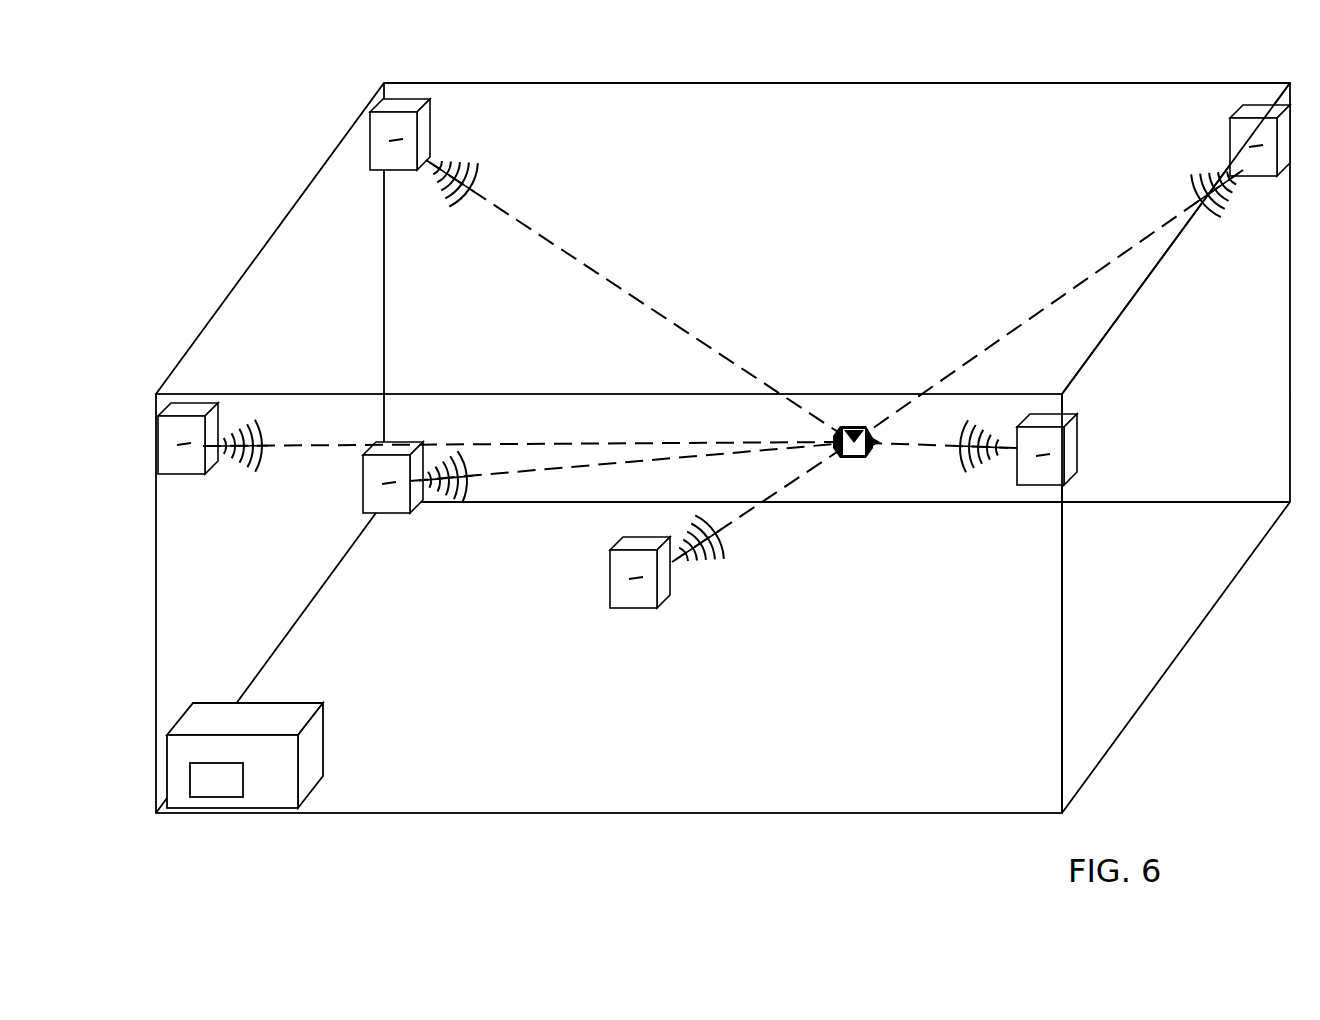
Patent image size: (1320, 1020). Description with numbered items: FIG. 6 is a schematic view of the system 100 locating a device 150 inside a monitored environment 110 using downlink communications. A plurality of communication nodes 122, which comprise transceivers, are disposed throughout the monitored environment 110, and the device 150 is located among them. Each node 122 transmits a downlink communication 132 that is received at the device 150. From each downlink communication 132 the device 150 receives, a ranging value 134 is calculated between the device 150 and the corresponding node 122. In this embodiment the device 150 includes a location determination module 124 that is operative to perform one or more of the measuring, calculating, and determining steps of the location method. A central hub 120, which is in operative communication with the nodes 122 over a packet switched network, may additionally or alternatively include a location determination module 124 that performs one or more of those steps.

The system 100 is at (155, 120).
The monitored environment 110 is at (798, 582).
The central hub 120 is at (312, 752).
The communication node 122 is at (426, 157).
The location determination module 124 is at (246, 783).
The downlink communication 132 is at (480, 190).
The ranging value 134 is at (622, 268).
The device 150 is at (850, 428).